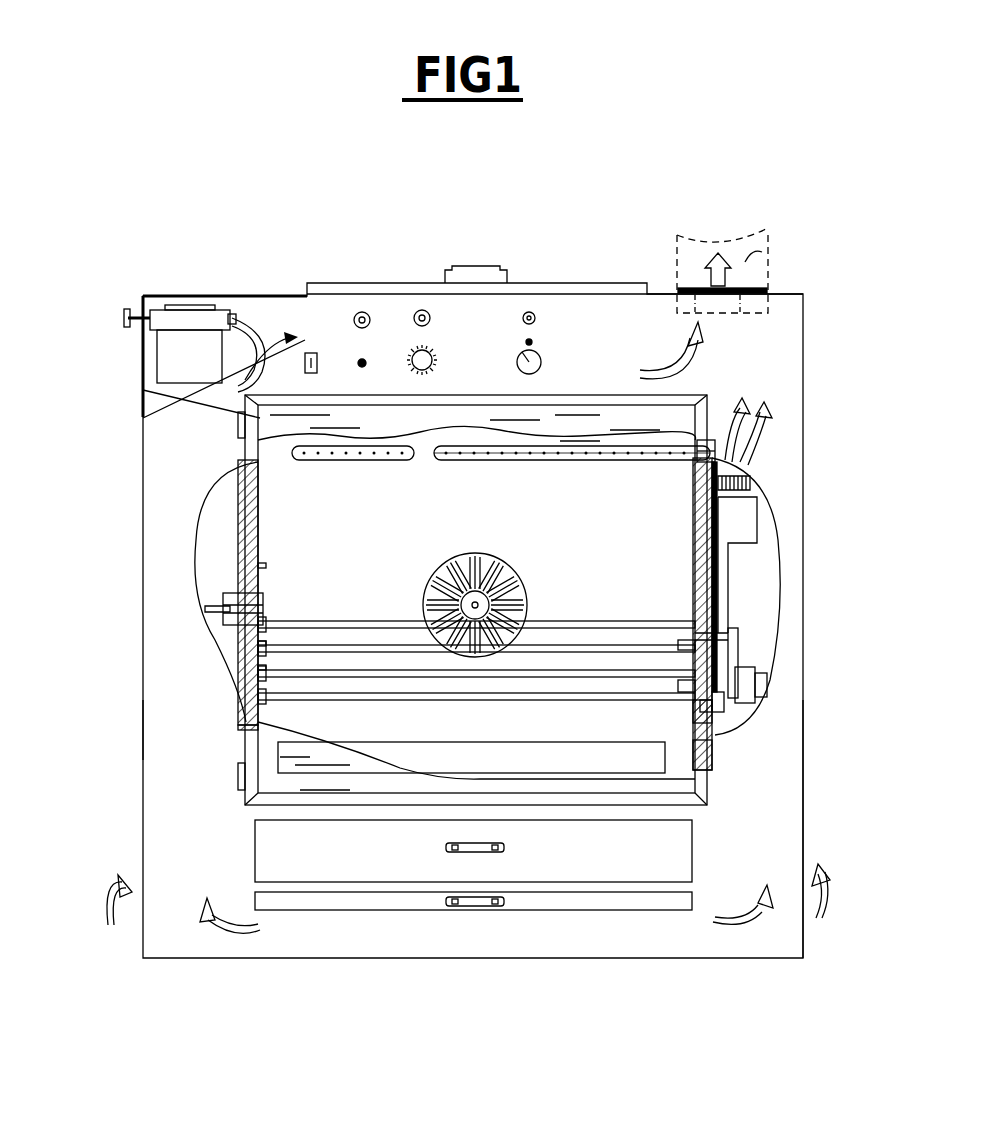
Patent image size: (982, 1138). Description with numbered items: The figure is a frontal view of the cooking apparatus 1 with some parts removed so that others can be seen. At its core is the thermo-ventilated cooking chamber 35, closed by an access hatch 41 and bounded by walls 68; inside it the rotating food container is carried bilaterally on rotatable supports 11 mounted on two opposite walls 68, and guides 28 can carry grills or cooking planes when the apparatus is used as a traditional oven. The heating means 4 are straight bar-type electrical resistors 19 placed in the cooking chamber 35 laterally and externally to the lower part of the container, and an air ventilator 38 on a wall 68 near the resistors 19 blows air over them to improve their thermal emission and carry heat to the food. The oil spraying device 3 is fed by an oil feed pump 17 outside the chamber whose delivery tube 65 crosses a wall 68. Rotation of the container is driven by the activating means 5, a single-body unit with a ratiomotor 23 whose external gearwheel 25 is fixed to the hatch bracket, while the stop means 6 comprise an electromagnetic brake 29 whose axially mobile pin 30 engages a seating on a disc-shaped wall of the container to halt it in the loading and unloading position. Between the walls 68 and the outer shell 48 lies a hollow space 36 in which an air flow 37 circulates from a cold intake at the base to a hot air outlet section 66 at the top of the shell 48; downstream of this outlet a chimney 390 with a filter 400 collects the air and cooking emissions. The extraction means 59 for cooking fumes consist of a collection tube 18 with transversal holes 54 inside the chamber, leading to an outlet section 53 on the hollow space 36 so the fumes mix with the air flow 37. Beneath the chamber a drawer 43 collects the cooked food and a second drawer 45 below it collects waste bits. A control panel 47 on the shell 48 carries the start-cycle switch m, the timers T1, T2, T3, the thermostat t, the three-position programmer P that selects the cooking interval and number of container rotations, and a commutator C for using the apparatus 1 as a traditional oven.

The apparatus 1 is at (120, 674).
The oil spraying device 3 is at (126, 342).
The heating means 4 is at (292, 688).
The activating means 5 is at (756, 641).
The stop means 6 is at (726, 716).
The rotatable supports 11 is at (230, 590).
The oil feed pump 17 is at (187, 358).
The collection tube 18 is at (660, 448).
The electrical resistors 19 is at (317, 700).
The ratiomotor 23 is at (737, 633).
The external gearwheel 25 is at (715, 583).
The guides 28 is at (240, 572).
The electromagnetic brake 29 is at (760, 712).
The axially mobile pin 30 is at (712, 751).
The thermo-ventilated cooking chamber 35 is at (240, 507).
The hollow space 36 is at (170, 818).
The air flow 37 is at (662, 366).
The air ventilator 38 is at (517, 602).
The access hatch 41 is at (240, 417).
The drawer 43 is at (340, 868).
The second drawer 45 is at (415, 900).
The control panel 47 is at (470, 342).
The shell 48 is at (777, 818).
The outlet section 53 is at (722, 450).
The transversal holes 54 is at (614, 447).
The extraction means 59 is at (270, 471).
The delivery tube 65 is at (245, 320).
The hot air outlet section 66 is at (700, 280).
The walls 68 is at (732, 458).
The chimney 390 is at (690, 260).
The filter 400 is at (752, 287).
The commutator C is at (307, 353).
The timer T1 is at (362, 359).
The timer T2 is at (422, 310).
The timer T3 is at (527, 312).
The thermostat t is at (413, 353).
The start-cycle switch m is at (305, 340).
The three-position programmer P is at (529, 358).